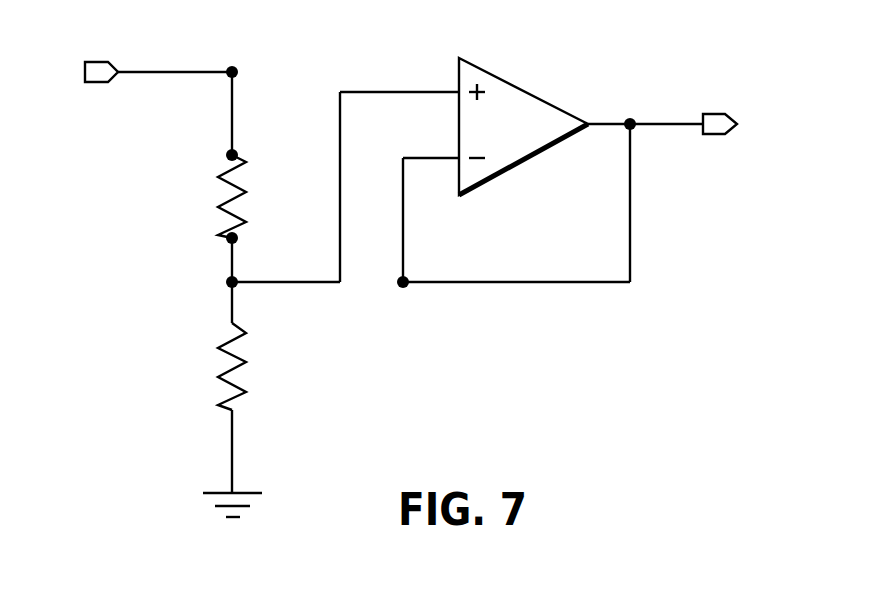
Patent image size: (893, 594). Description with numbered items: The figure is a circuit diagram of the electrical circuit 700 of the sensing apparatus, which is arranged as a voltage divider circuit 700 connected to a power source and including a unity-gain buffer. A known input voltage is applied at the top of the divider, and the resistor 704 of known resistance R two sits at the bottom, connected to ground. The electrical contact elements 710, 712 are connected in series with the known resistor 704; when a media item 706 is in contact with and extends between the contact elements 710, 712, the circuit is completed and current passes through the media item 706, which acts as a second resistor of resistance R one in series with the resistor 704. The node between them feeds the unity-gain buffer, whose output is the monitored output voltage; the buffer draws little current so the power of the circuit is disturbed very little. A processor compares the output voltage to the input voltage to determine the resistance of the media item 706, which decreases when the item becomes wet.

The electrical circuit 700 is at (419, 277).
The electrical contact element 710 is at (537, 97).
The media item 706 is at (226, 200).
The electrical contact element 712 is at (229, 242).
The resistor 704 is at (225, 368).